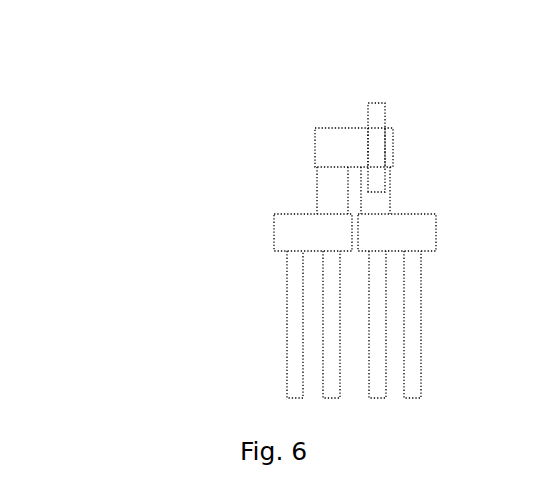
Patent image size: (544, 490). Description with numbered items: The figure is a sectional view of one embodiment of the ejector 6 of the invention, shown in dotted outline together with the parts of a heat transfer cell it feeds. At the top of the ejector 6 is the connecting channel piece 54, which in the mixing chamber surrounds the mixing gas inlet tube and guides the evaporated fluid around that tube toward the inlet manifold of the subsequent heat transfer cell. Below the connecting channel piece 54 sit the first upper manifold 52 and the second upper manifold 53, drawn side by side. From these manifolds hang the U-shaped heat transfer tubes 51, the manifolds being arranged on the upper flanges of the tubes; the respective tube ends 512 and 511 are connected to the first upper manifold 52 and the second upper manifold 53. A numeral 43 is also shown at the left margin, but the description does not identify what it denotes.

The ejector 6 is at (410, 141).
The connecting channel piece 54 is at (350, 147).
The first upper manifold 52 is at (297, 230).
The second upper manifold 53 is at (407, 232).
The U-shaped heat transfer tube 51 is at (348, 349).
The end of U-shaped tube 512 is at (330, 265).
The end of U-shaped tube 511 is at (377, 265).
The housing portion 43 is at (0, 389).